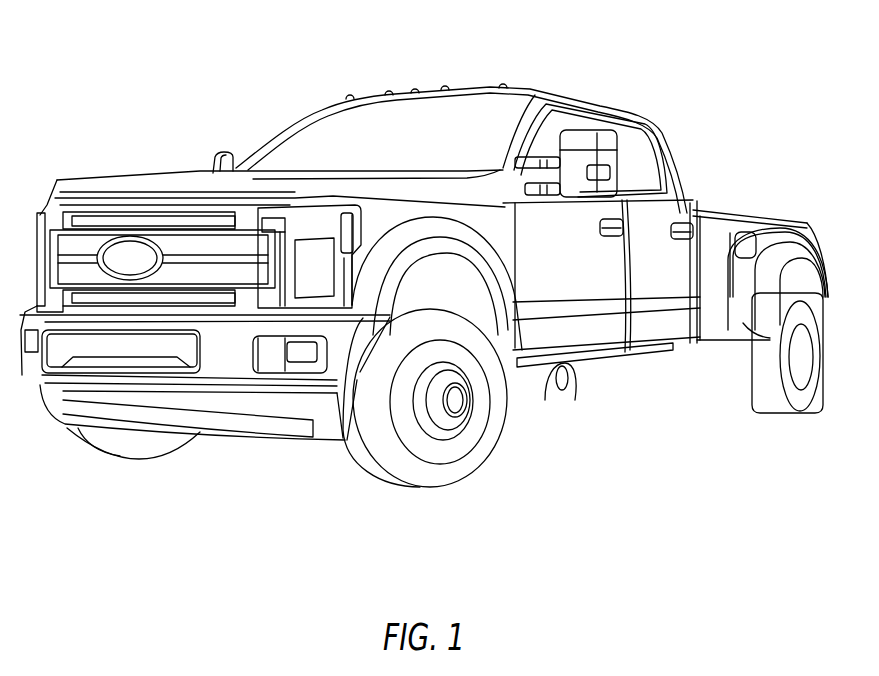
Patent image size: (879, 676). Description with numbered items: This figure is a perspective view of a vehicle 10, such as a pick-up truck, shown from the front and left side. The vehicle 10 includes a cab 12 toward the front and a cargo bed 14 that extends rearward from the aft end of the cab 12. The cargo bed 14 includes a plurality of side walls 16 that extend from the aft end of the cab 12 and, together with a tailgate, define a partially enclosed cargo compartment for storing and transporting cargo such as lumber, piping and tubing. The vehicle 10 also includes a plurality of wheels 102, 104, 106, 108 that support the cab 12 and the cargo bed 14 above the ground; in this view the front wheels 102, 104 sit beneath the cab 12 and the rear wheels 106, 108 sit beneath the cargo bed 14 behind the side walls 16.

The vehicle 10 is at (196, 70).
The cab 12 is at (590, 136).
The cargo bed 14 is at (722, 225).
The side walls 16 is at (750, 252).
The wheel 102 is at (433, 482).
The wheel 104 is at (163, 447).
The wheel 106 is at (774, 407).
The wheel 108 is at (547, 400).